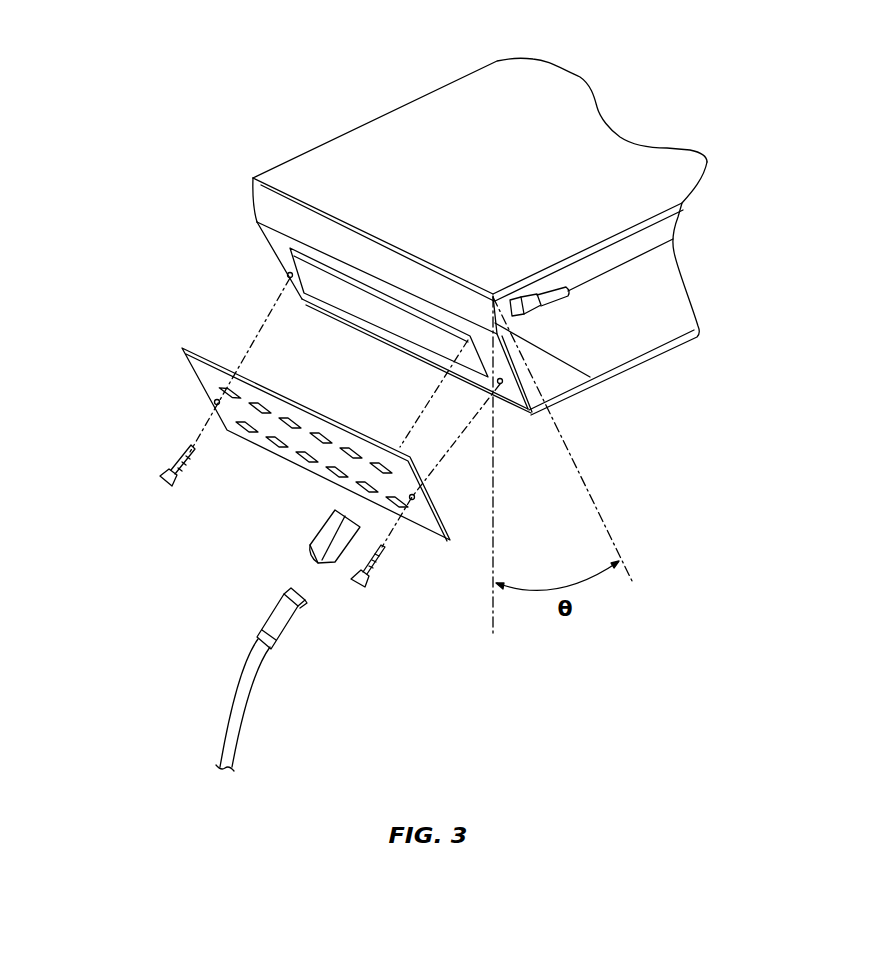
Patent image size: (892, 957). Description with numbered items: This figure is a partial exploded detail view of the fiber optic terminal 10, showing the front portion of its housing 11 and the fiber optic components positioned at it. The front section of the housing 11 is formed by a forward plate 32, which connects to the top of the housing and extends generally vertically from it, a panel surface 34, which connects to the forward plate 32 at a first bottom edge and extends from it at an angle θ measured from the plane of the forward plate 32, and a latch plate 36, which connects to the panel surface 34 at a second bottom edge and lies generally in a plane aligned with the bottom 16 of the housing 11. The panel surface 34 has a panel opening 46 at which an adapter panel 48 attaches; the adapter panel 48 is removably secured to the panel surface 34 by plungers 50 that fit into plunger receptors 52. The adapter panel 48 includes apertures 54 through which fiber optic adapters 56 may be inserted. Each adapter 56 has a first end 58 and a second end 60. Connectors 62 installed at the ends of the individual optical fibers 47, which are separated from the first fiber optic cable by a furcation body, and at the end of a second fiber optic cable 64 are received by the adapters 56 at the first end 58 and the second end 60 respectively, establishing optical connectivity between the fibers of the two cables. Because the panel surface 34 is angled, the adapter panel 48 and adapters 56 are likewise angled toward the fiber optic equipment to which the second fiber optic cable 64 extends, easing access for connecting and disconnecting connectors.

The fiber optic terminal 10 is at (450, 244).
The housing 11 is at (410, 102).
The bottom 16 is at (604, 247).
The forward plate 32 is at (358, 261).
The panel surface 34 is at (277, 240).
The latch plate 36 is at (543, 387).
The panel opening 46 is at (312, 282).
The optical fibers 47 is at (620, 265).
The adapter panel 48 is at (314, 419).
The plungers 50 is at (161, 467).
The plunger receptors 52 is at (215, 400).
The apertures 54 is at (280, 451).
The fiber optic adapters 56 is at (276, 572).
The first end 58 is at (332, 572).
The second end 60 is at (323, 560).
The connectors 62 is at (543, 310).
The second fiber optic cable 64 is at (240, 707).